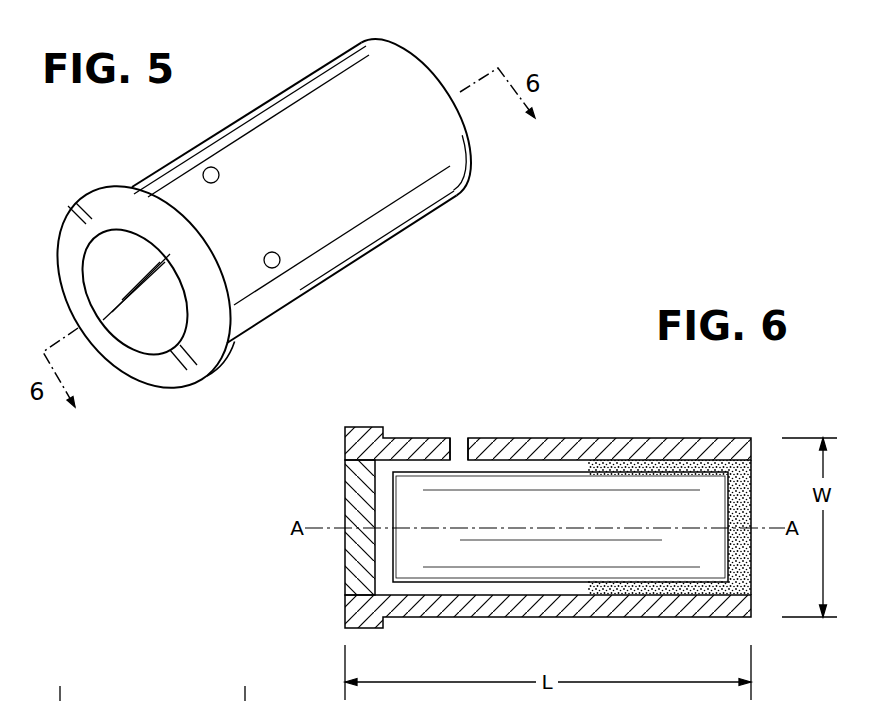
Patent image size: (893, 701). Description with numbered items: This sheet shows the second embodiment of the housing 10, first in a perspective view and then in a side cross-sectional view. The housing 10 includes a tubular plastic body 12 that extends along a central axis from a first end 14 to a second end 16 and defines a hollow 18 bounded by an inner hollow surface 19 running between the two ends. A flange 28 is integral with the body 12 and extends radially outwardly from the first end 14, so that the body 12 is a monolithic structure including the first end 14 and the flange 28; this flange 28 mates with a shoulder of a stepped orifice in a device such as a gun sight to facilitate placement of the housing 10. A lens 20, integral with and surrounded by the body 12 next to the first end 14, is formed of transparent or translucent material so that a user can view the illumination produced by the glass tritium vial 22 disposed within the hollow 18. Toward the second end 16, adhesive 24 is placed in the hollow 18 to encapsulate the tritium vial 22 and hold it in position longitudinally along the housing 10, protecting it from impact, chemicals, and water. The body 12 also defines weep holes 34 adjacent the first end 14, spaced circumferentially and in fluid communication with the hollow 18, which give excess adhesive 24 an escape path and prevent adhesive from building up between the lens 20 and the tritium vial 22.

In FIG. 5, the housing 10 is at (233, 82).
In FIG. 6, the housing 10 is at (608, 407).
In FIG. 5, the body 12 is at (437, 137).
In FIG. 6, the body 12 is at (623, 617).
In FIG. 5, the first end 14 is at (72, 275).
In FIG. 6, the first end 14 is at (345, 450).
In FIG. 5, the second end 16 is at (405, 43).
In FIG. 6, the second end 16 is at (752, 448).
In FIG. 6, the hollow 18 is at (382, 587).
In FIG. 6, the inner hollow surface 19 is at (510, 590).
In FIG. 5, the lens 20 is at (108, 263).
In FIG. 6, the lens 20 is at (345, 570).
In FIG. 6, the tritium vial 22 is at (575, 498).
In FIG. 6, the adhesive 24 is at (743, 573).
In FIG. 5, the flange 28 is at (217, 355).
In FIG. 6, the flange 28 is at (360, 425).
In FIG. 5, the weep hole 34 is at (209, 167).
In FIG. 6, the weep hole 34 is at (450, 447).